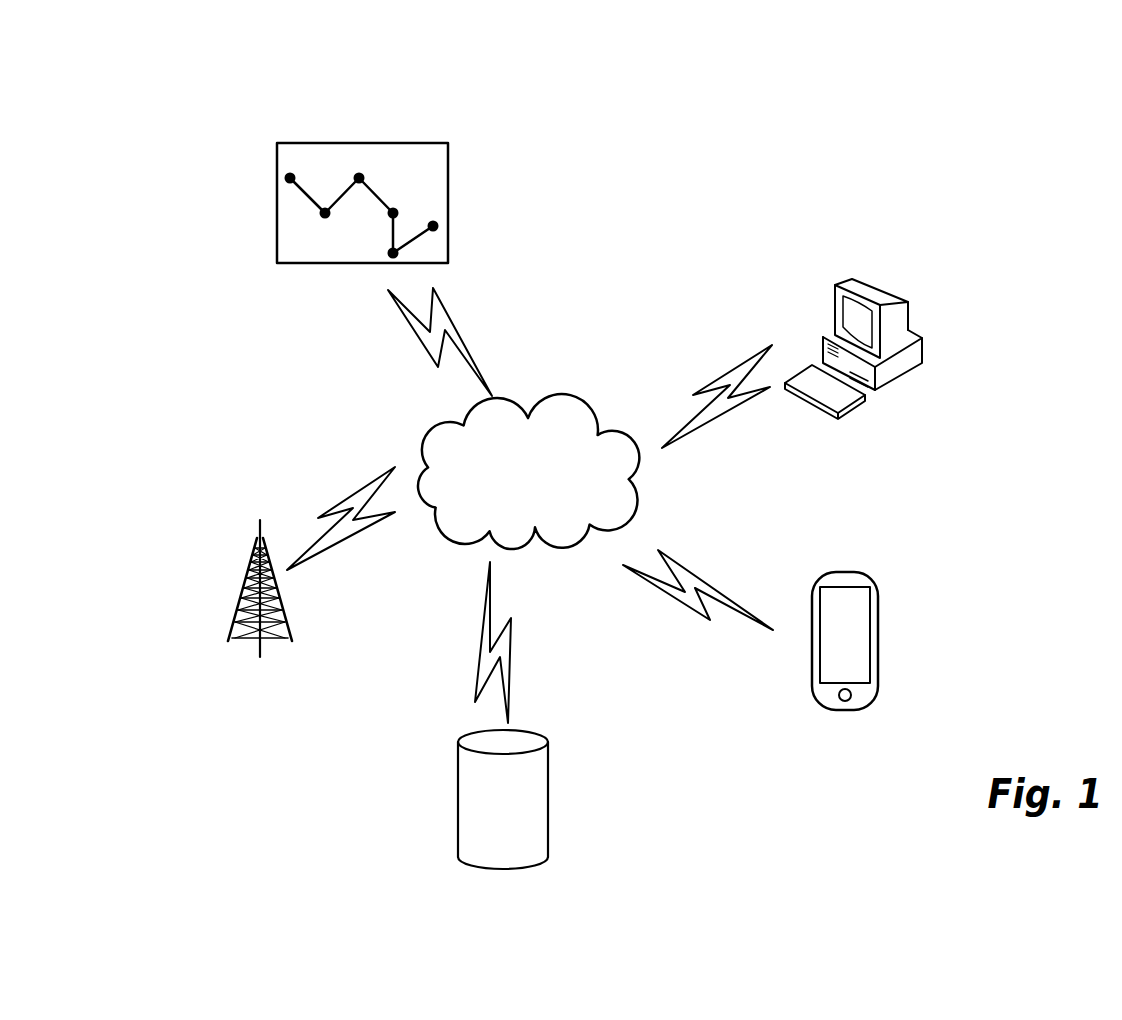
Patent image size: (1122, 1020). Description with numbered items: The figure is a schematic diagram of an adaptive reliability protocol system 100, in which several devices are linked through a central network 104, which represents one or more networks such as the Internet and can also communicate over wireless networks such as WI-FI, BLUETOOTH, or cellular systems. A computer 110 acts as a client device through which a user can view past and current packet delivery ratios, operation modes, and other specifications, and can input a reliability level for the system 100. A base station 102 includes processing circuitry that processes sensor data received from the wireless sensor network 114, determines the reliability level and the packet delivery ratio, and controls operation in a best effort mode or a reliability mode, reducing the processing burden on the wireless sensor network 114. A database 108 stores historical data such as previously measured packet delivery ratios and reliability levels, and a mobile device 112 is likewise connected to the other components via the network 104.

The adaptive reliability protocol system 100 is at (152, 118).
The base station 102 is at (260, 512).
The network 104 is at (528, 471).
The database 108 is at (538, 723).
The computer 110 is at (887, 278).
The mobile device 112 is at (858, 572).
The wireless sensor network (WSN) 114 is at (343, 132).